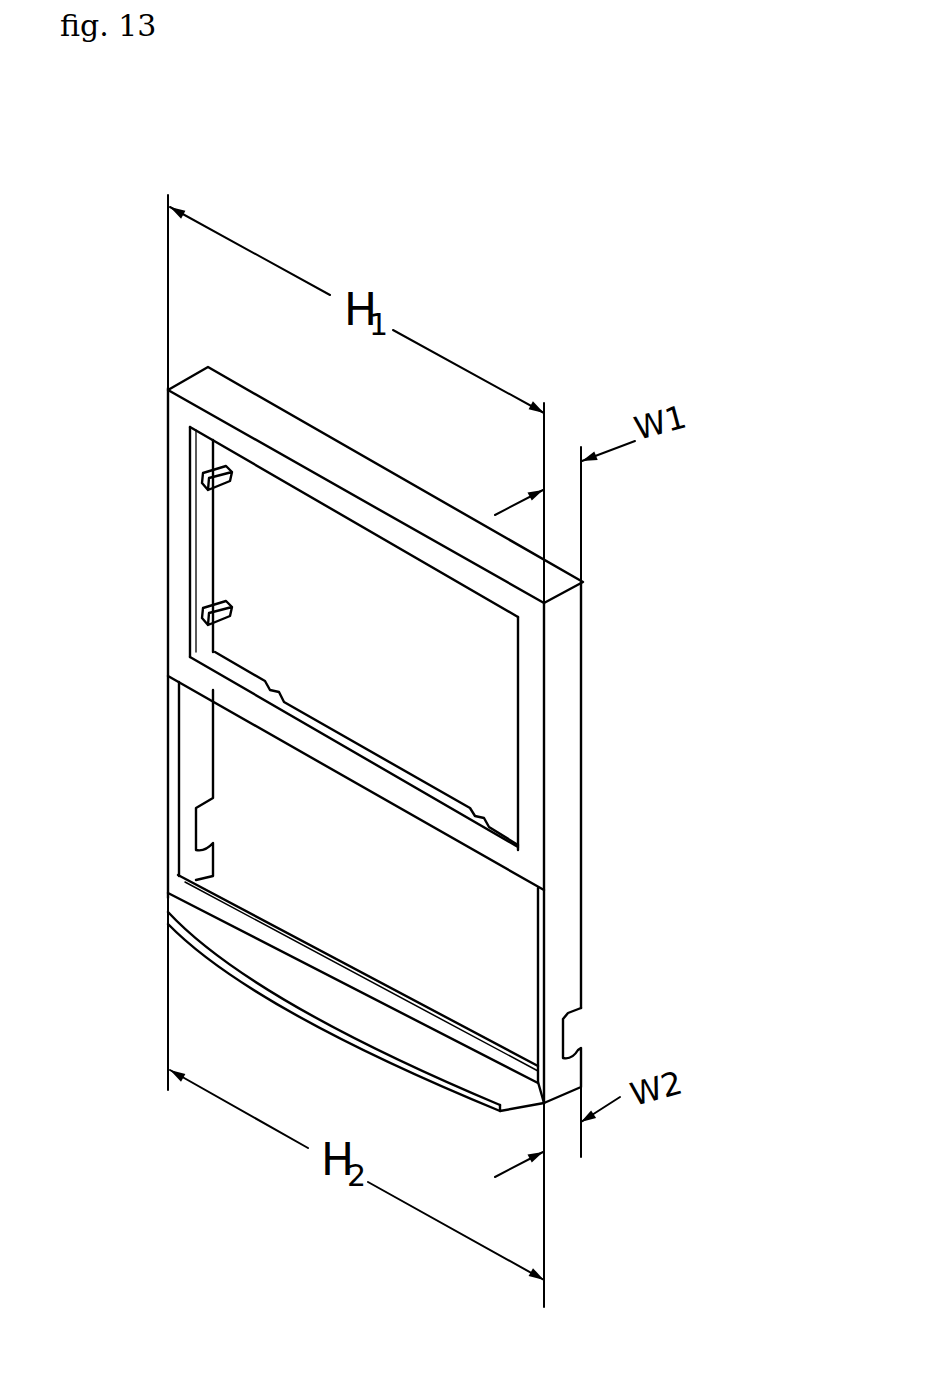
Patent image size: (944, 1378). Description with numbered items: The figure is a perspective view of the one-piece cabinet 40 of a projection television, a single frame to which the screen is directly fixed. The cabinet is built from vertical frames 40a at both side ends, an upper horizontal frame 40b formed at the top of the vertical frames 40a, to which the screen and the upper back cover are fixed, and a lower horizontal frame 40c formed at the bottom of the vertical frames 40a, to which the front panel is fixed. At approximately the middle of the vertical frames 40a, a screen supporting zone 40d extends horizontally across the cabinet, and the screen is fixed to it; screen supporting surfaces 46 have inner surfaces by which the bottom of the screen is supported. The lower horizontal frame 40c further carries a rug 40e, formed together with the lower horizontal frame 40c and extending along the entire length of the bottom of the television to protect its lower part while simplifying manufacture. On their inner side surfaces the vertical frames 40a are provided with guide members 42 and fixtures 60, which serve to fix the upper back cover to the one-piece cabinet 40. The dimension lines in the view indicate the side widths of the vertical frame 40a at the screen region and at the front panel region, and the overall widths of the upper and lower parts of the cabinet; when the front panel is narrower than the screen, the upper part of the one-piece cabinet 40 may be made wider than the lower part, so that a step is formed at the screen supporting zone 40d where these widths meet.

The one-piece cabinet 40 is at (398, 460).
The vertical frame 40a is at (570, 775).
The upper horizontal frame 40b is at (270, 434).
The lower horizontal frame 40c is at (450, 1037).
The screen supporting zone 40d is at (510, 825).
The rug 40e is at (342, 1006).
The guide member 42 is at (205, 470).
The screen supporting surface 46 is at (182, 497).
The fixture 60 is at (216, 463).